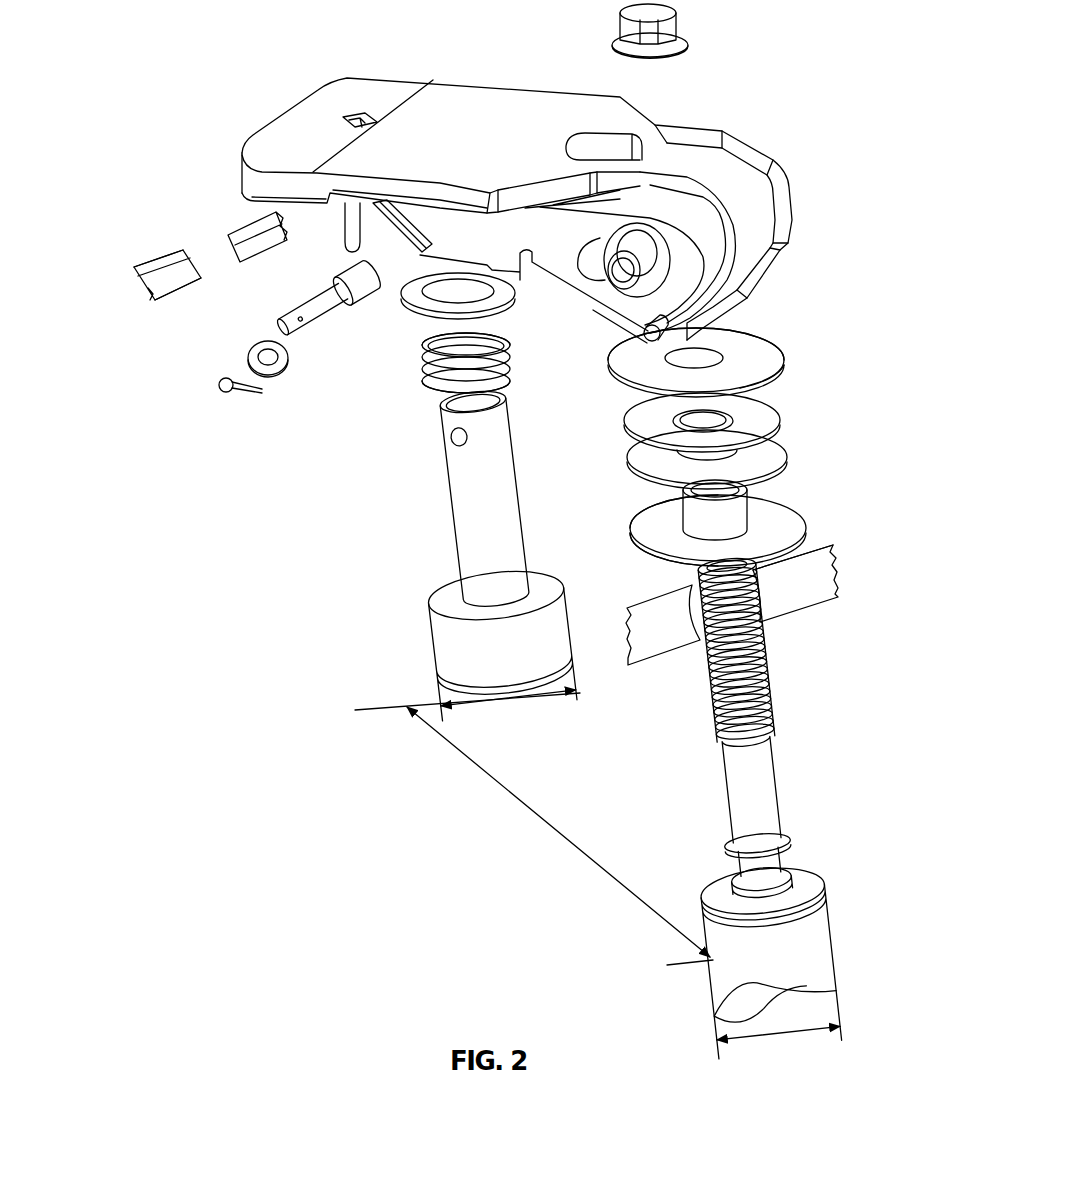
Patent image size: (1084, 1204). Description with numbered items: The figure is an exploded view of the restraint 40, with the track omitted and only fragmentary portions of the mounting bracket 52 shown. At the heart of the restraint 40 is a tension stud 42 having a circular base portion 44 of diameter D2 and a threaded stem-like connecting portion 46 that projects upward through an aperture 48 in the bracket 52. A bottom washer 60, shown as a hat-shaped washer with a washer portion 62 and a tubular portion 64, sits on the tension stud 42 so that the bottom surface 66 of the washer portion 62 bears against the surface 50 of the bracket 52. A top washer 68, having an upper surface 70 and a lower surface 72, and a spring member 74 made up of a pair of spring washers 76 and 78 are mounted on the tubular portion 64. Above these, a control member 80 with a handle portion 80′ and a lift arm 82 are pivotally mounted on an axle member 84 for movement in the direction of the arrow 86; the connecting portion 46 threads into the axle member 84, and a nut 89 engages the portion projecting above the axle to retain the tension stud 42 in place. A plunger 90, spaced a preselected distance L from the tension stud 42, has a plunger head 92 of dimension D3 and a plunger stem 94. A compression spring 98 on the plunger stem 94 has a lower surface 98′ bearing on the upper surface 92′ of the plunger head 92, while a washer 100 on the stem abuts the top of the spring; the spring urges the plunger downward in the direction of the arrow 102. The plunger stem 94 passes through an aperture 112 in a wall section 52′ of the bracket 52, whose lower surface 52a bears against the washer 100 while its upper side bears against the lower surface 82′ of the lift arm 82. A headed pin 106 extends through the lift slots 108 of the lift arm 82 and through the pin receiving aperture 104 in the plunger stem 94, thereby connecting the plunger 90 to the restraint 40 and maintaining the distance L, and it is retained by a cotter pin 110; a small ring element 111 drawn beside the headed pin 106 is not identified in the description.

The restraint 40 is at (420, 26).
The arrow 86 is at (402, 68).
The nut 89 is at (682, 20).
The control member 80 is at (516, 198).
The handle portion 80′ is at (443, 81).
The wall section 52′ is at (130, 277).
The lower surface 52a is at (160, 299).
The aperture 112 is at (210, 243).
The lift slots 108 is at (335, 267).
The headed pin 106 is at (300, 314).
The washer 111 is at (264, 340).
The cotter pin 110 is at (230, 393).
The lift arm 82 is at (360, 254).
The lower surface of lift arm 82′ is at (420, 252).
The compression spring 98 is at (422, 364).
The lower surface of compression spring 98′ is at (430, 386).
The washer 100 is at (500, 300).
The axle member 84 is at (623, 274).
The upper surface of top washer 70 is at (754, 338).
The top washer 68 is at (778, 360).
The lower surface of top washer 72 is at (778, 377).
The spring member 74 is at (620, 440).
The spring washer 76 is at (770, 410).
The spring washer 78 is at (773, 446).
The tubular portion 64 is at (740, 500).
The bottom washer 60 is at (787, 510).
The washer portion 62 is at (646, 515).
The bottom surface 66 is at (656, 556).
The surface of bracket 50 is at (812, 548).
The bracket 52 is at (842, 575).
The aperture 48 is at (696, 650).
The threaded connecting portion 46 is at (771, 706).
The tension stud 42 is at (782, 793).
The base portion 44 is at (822, 886).
The dimension of plunger head D3 is at (575, 712).
The diameter of base portion D2 is at (757, 1042).
The preselected distance L is at (560, 833).
The arrow 102 is at (295, 480).
The pin receiving aperture 104 is at (457, 443).
The plunger stem 94 is at (447, 493).
The plunger 90 is at (465, 513).
The plunger head 92 is at (445, 640).
The upper surface of plunger head 92′ is at (438, 596).